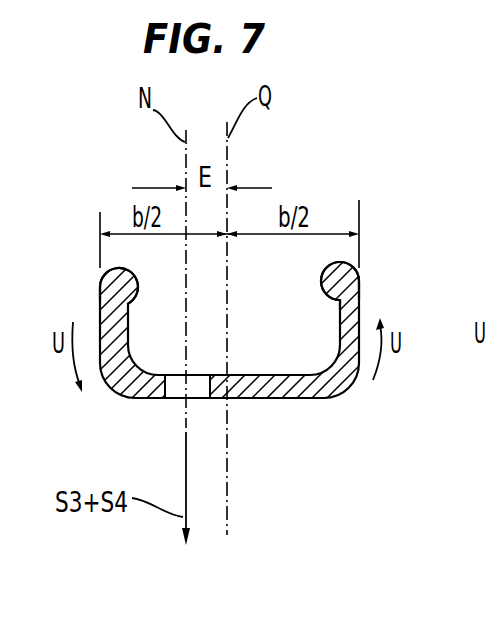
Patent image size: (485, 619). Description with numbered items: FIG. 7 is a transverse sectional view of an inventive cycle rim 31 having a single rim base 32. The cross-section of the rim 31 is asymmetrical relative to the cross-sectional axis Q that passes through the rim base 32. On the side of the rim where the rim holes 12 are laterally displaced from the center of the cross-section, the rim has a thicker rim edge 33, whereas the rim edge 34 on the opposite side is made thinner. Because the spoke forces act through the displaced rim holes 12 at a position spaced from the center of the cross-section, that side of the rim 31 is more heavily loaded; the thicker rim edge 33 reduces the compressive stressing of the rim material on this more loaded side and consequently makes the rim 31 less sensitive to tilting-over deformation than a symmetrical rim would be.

The rim 31 is at (114, 182).
The rim base 32 is at (262, 383).
The rim edge 33 is at (110, 308).
The rim edge 34 is at (353, 302).
The rim holes 12 is at (183, 398).